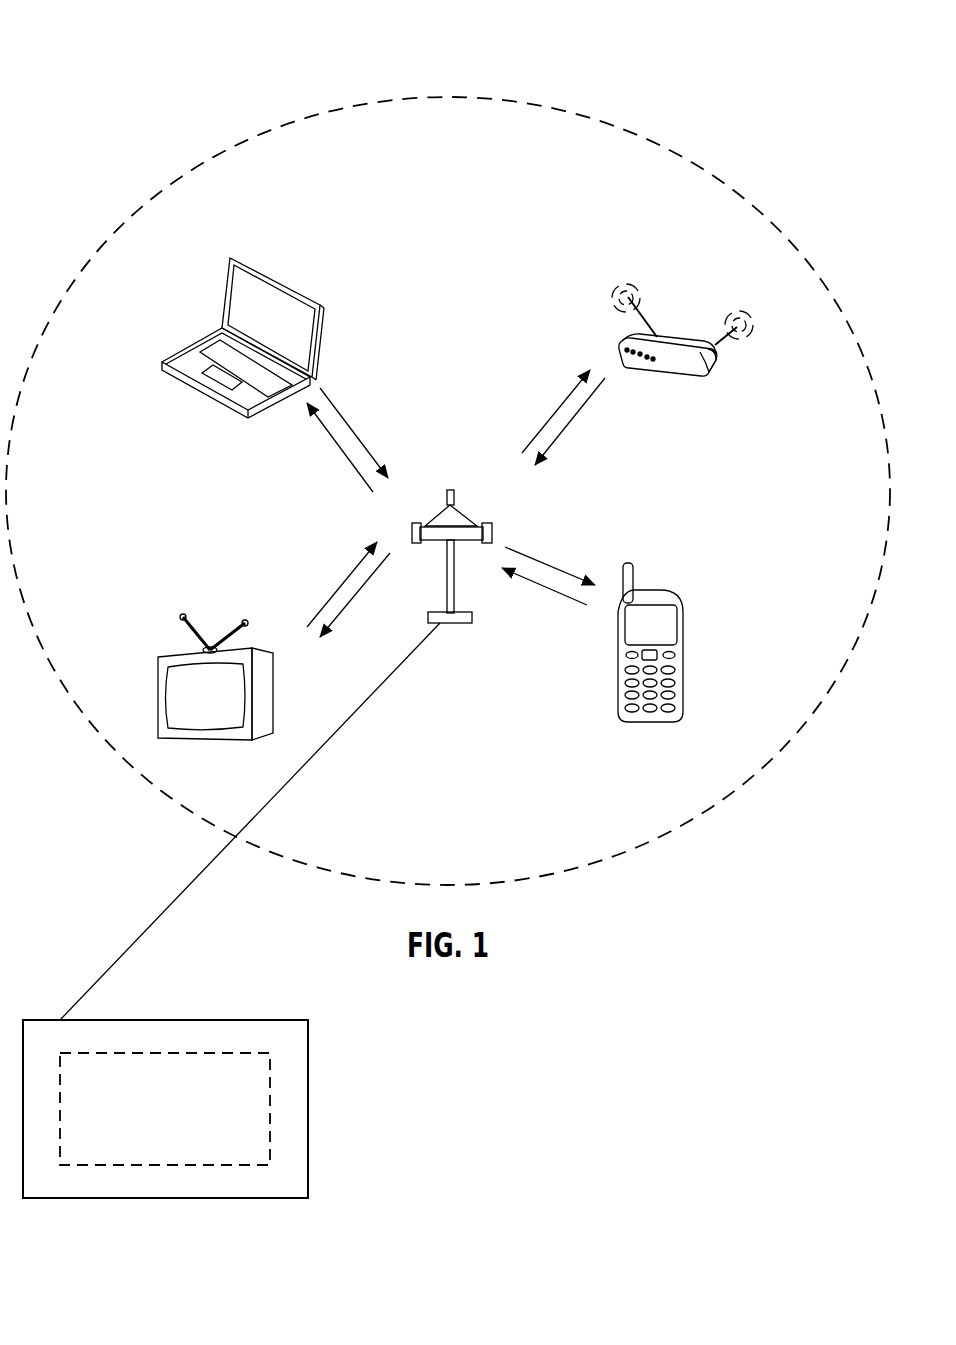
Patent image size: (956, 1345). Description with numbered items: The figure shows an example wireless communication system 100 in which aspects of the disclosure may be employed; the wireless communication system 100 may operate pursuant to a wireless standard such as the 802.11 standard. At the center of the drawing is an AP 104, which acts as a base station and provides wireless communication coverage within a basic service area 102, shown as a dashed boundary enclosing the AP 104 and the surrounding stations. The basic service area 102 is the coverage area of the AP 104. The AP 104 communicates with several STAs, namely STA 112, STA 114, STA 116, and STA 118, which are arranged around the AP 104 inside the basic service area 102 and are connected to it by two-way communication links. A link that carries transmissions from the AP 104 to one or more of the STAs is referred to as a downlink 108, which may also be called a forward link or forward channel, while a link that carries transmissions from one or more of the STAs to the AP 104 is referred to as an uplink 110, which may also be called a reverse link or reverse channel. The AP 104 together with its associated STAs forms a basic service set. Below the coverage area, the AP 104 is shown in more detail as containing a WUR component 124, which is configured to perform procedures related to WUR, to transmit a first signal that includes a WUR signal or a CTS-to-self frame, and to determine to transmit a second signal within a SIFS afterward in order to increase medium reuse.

The wireless communication system 100 is at (148, 58).
The basic service area 102 is at (457, 100).
The AP 104 is at (451, 490).
The downlink 108 is at (550, 563).
The uplink 110 is at (563, 593).
The STA 112 is at (660, 337).
The STA 114 is at (645, 585).
The STA 116 is at (248, 267).
The STA 118 is at (185, 655).
The WUR component 124 is at (270, 1097).